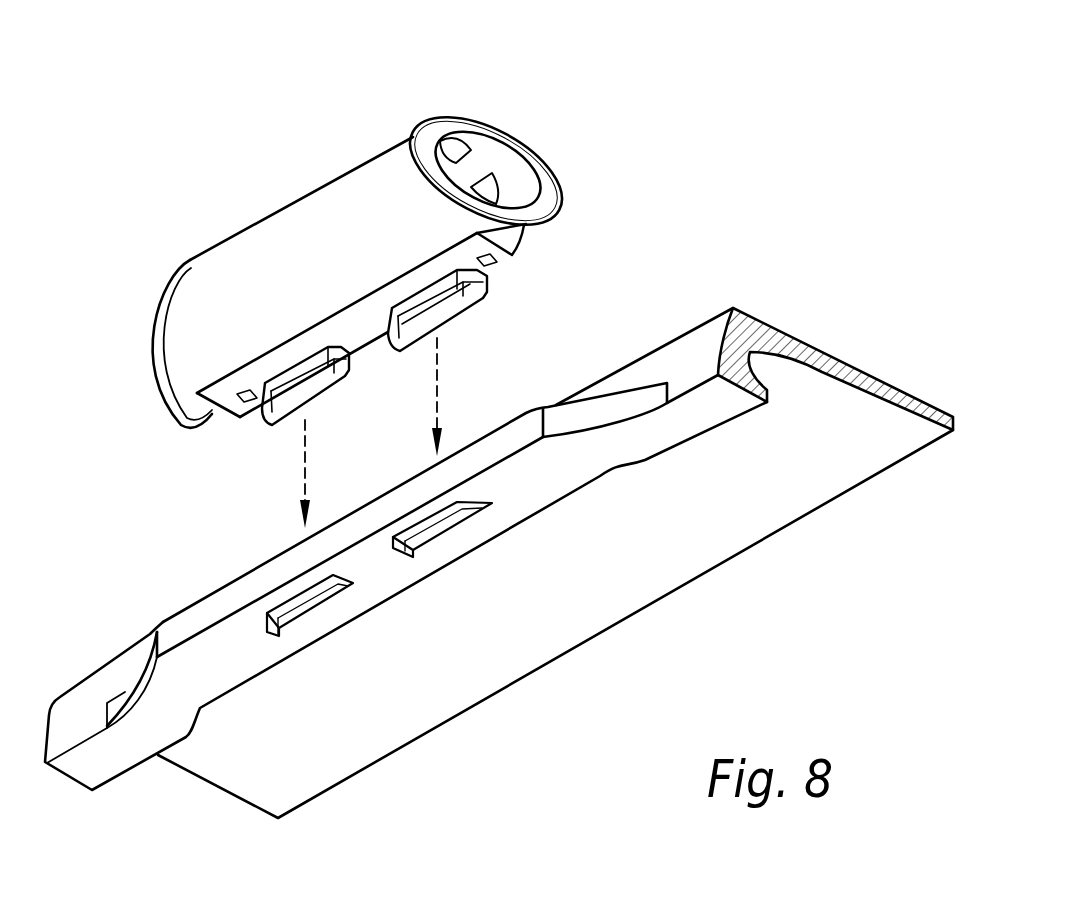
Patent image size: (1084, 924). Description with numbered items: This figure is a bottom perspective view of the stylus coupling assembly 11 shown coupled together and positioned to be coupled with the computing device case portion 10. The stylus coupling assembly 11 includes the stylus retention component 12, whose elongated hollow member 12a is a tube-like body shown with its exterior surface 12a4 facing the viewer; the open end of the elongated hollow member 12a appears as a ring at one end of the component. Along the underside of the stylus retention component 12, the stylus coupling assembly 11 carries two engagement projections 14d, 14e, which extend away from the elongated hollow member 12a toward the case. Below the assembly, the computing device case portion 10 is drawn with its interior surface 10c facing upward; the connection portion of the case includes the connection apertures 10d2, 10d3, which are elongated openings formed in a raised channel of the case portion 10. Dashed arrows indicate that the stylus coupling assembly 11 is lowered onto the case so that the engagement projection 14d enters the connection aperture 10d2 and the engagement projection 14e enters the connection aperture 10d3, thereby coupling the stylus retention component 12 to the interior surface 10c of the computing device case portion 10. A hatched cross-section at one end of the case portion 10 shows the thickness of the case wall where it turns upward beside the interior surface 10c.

The computing device case portion 10 is at (803, 243).
The interior surface 10c is at (660, 555).
The connection aperture 10d2 is at (457, 528).
The connection aperture 10d3 is at (307, 612).
The stylus coupling assembly 11 is at (296, 122).
The stylus retention component 12 is at (524, 73).
The elongated hollow member 12a is at (182, 202).
The exterior surface 12a4 is at (350, 259).
The engagement projection 14d is at (505, 324).
The engagement projection 14e is at (256, 460).